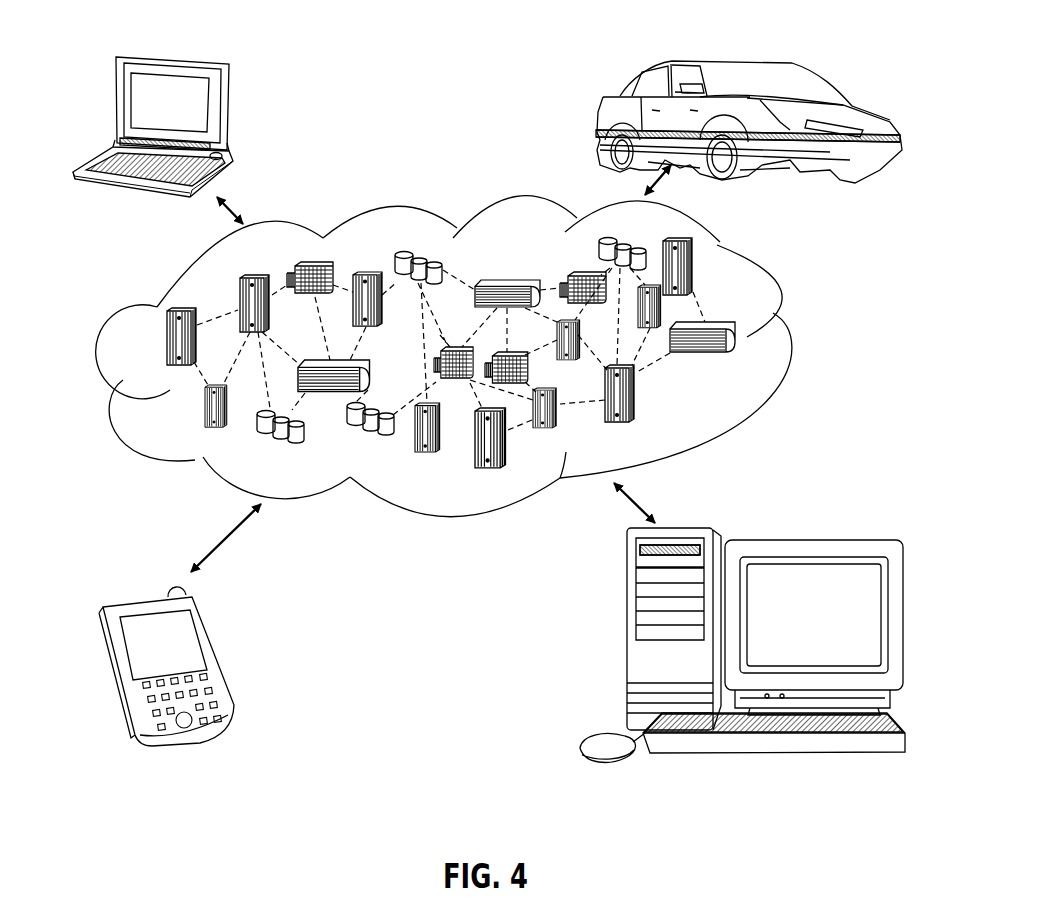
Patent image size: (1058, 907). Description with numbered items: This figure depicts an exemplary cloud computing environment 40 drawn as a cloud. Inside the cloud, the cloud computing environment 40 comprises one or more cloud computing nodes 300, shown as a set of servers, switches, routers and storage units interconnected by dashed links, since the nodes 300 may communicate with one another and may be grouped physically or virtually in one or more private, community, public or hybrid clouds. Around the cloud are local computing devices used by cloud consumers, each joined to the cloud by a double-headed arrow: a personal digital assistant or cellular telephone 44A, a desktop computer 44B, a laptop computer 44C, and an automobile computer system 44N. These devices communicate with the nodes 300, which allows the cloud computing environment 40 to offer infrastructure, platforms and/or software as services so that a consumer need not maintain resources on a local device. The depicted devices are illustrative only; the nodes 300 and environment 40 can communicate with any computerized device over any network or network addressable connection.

The cloud computing environment 40 is at (778, 300).
The cloud computing nodes 300 is at (757, 361).
The personal digital assistant (PDA) or cellular telephone 44A is at (213, 656).
The desktop computer 44B is at (625, 635).
The laptop computer 44C is at (230, 107).
The automobile computer system 44N is at (600, 112).